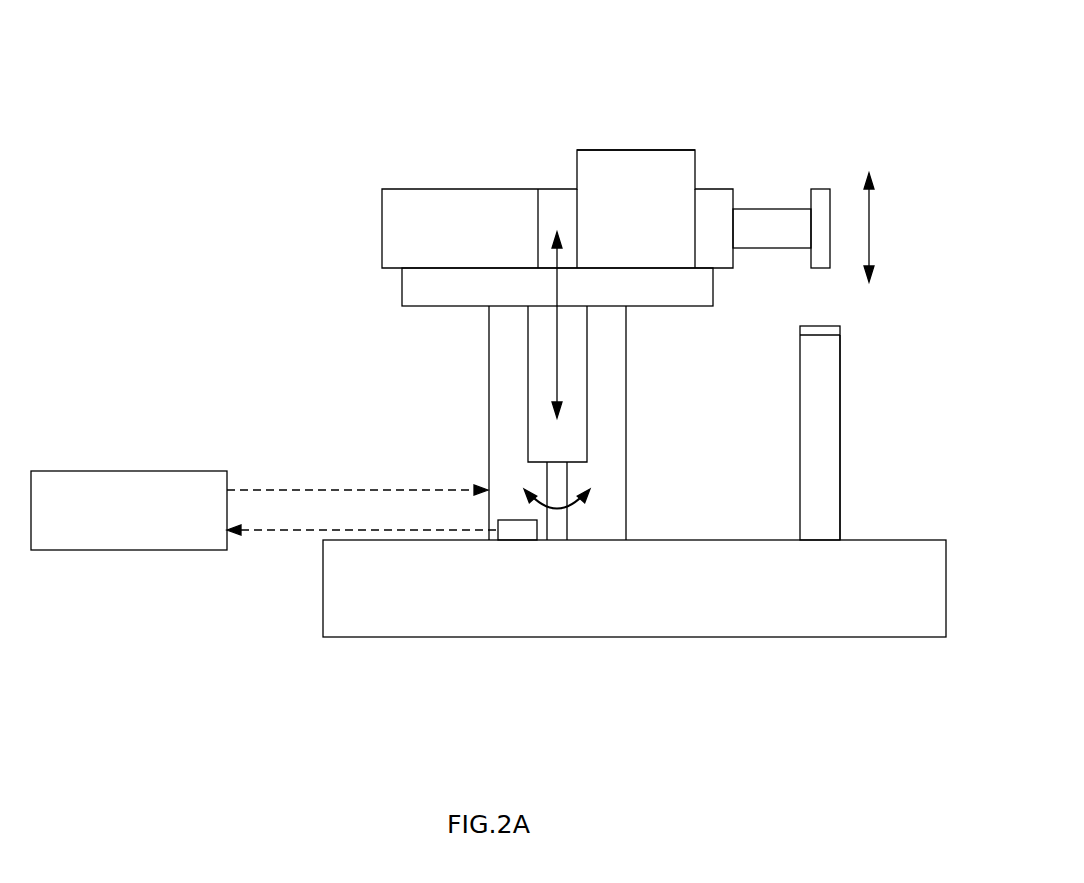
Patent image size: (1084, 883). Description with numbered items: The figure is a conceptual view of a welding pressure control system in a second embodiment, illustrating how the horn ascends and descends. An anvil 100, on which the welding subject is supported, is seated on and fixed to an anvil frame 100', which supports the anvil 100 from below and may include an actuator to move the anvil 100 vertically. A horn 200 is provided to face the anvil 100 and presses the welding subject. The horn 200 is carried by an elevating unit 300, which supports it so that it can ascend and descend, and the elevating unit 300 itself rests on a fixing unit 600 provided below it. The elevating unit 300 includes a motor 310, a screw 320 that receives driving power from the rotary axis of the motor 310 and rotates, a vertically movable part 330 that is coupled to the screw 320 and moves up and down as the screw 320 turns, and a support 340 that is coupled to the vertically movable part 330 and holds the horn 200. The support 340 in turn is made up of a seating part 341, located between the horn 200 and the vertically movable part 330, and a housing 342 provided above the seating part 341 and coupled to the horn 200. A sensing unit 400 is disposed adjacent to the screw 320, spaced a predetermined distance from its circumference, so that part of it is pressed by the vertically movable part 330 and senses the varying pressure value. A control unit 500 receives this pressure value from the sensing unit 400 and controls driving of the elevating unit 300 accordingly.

The anvil 100 is at (859, 428).
The anvil frame 100' is at (883, 437).
The horn 200 is at (769, 209).
The elevating unit 300 is at (150, 70).
The motor 310 is at (605, 420).
The screw 320 is at (553, 487).
The vertically movable part 330 is at (528, 382).
The support 340 is at (635, 87).
The seating part 341 is at (478, 287).
The housing 342 is at (633, 150).
The sensing unit 400 is at (518, 530).
The control unit 500 is at (148, 539).
The fixing unit 600 is at (635, 615).